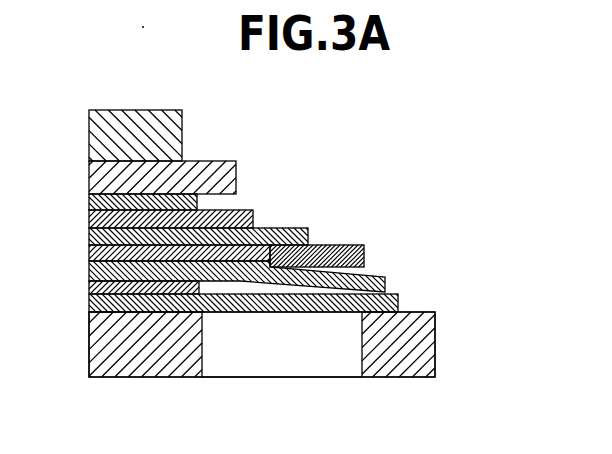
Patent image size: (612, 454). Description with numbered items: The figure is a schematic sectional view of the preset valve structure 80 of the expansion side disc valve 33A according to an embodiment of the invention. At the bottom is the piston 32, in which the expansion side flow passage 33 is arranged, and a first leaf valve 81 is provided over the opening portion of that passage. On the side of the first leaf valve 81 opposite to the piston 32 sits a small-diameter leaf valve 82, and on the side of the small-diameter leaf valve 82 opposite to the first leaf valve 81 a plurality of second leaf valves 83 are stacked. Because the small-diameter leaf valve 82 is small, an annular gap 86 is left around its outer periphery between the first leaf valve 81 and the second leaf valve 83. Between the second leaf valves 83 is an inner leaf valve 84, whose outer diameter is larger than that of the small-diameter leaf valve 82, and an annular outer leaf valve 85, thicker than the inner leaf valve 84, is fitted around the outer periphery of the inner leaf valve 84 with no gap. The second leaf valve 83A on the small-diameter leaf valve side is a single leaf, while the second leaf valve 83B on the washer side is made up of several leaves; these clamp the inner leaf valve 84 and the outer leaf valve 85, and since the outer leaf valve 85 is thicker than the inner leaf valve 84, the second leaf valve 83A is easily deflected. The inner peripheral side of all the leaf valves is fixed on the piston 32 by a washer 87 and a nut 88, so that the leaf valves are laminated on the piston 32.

The nut 88 is at (182, 118).
The washer 87 is at (228, 166).
The second leaf valves 83 is at (205, 201).
The second leaf valve on the washer side 83B is at (288, 216).
The second leaf valve on the small-diameter leaf valve side 83A is at (385, 283).
The inner leaf valve 84 is at (88, 253).
The annular outer leaf valve 85 is at (364, 253).
The small-diameter leaf valve 82 is at (88, 283).
The first leaf valve 81 is at (398, 303).
The piston 32 is at (427, 348).
The expansion side flow passage 33 is at (202, 348).
The annular gap 86 is at (285, 290).
The expansion side disc valve 33A is at (468, 177).
The preset valve structure 80 is at (503, 191).